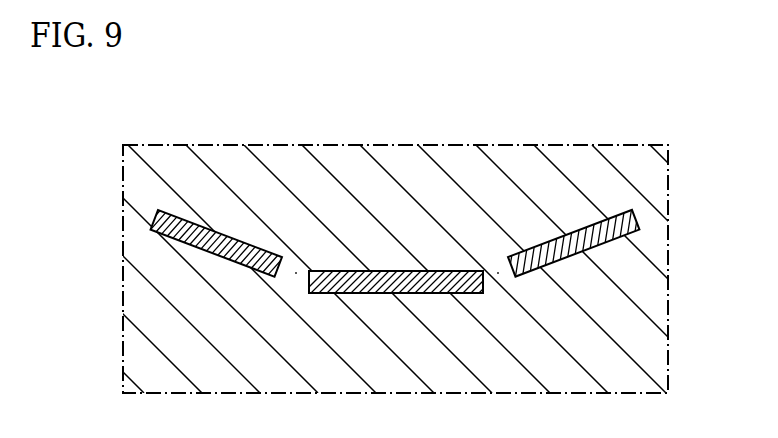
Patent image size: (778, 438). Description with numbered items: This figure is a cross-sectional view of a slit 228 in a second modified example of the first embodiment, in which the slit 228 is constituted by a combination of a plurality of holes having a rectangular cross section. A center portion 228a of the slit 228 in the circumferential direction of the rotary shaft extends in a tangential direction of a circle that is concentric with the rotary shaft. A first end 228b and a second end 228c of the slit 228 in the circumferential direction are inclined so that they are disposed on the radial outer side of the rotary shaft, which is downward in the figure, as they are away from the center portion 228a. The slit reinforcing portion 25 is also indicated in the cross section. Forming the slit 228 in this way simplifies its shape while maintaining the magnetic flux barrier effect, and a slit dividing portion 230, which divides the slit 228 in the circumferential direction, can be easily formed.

The slit 228 is at (216, 218).
The center portion 228a is at (385, 272).
The first end 228b is at (171, 212).
The second end 228c is at (598, 230).
The slit reinforcing portion 25 is at (433, 272).
The slit dividing portion 230 is at (296, 272).